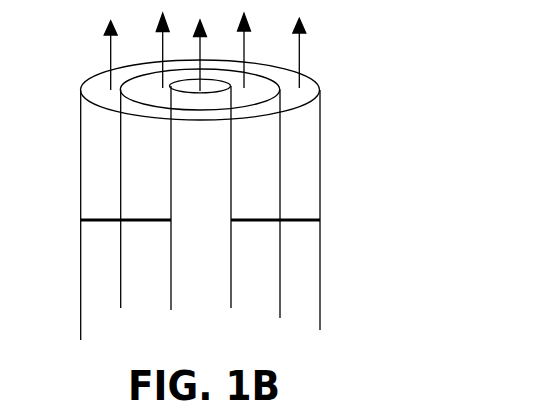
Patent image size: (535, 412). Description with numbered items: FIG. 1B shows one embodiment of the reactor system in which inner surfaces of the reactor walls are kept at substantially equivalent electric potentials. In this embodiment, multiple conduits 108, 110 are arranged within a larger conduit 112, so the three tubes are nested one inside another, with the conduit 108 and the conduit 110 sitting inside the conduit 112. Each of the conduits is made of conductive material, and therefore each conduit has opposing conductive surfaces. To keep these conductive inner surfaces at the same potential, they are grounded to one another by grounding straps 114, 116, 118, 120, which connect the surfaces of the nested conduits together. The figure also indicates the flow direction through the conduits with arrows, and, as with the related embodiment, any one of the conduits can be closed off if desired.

The conduit 108 is at (170, 148).
The conduit 110 is at (300, 160).
The conduit 112 is at (322, 248).
The grounding strap 114 is at (93, 219).
The grounding strap 116 is at (157, 223).
The grounding strap 118 is at (242, 221).
The grounding strap 120 is at (310, 217).